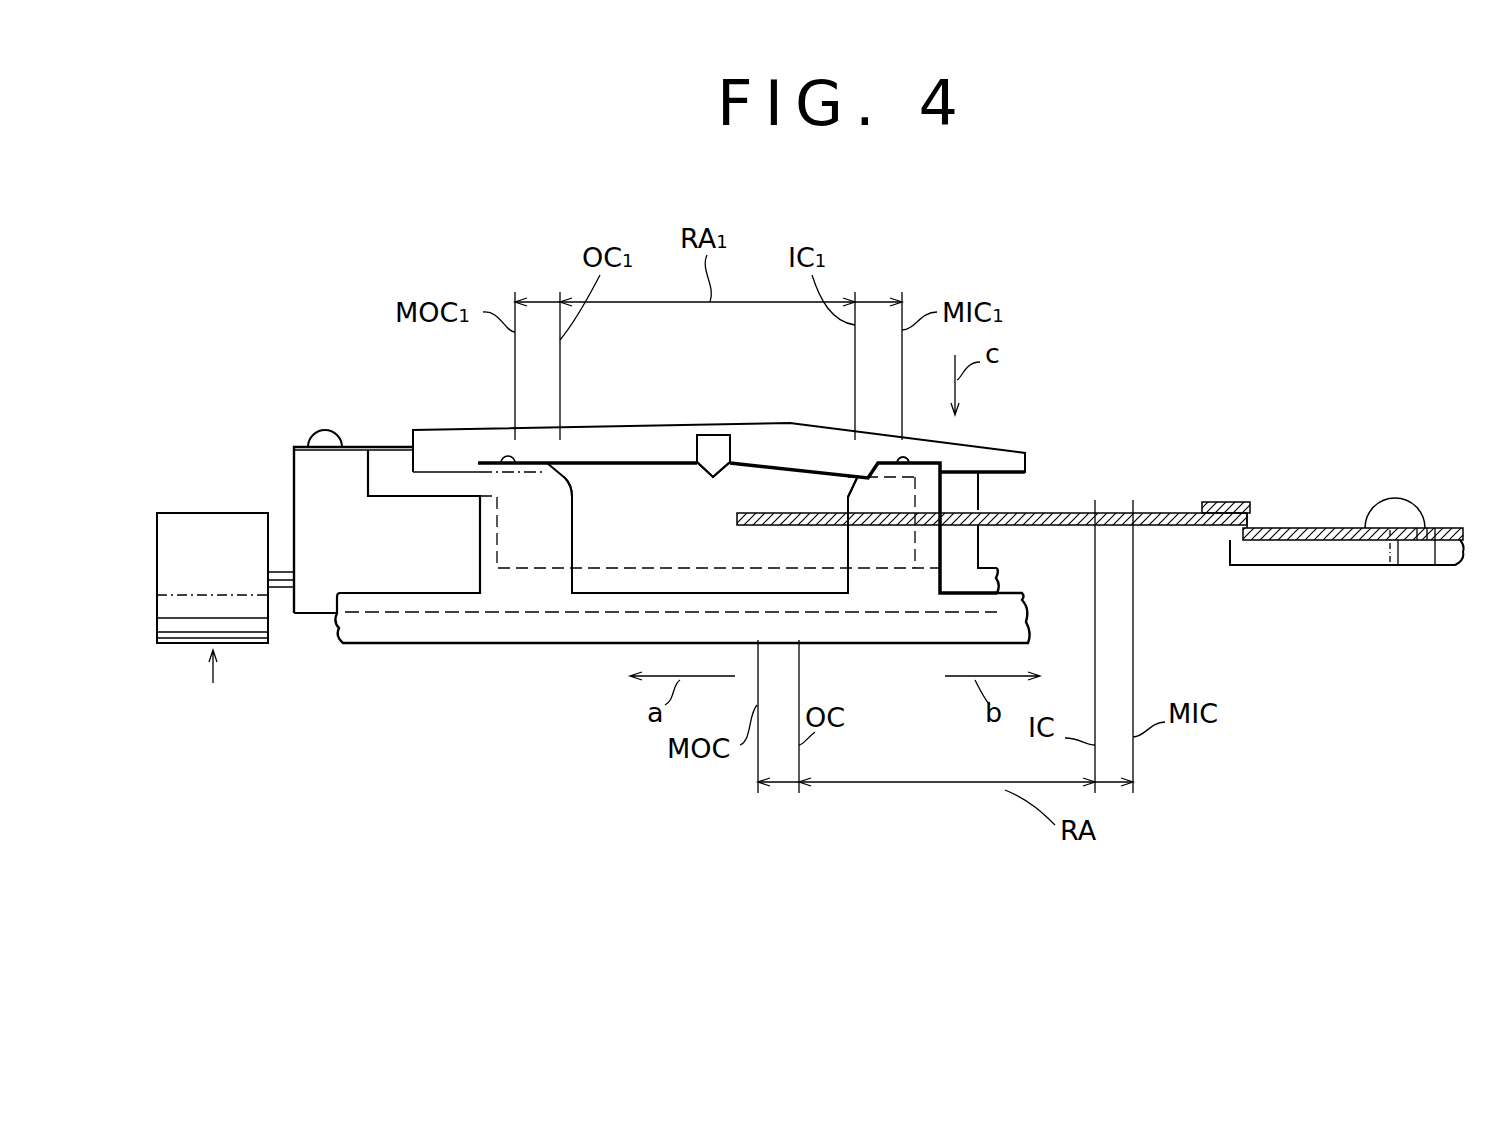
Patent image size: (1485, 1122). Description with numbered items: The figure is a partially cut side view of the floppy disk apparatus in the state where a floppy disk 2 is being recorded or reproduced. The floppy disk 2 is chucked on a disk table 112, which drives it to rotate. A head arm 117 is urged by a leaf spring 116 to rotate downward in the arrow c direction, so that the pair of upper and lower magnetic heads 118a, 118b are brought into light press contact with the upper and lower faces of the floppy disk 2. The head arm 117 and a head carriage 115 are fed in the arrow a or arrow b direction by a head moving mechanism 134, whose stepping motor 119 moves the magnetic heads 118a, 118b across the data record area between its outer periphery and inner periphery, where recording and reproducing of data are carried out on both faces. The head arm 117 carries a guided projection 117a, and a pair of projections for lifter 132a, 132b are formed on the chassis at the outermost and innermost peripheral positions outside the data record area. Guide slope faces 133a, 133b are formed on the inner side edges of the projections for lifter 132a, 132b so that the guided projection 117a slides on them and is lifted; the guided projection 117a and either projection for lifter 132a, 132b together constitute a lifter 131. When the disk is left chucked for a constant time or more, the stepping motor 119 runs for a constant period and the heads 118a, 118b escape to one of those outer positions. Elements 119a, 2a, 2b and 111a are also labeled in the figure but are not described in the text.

The stepping motor 119 is at (192, 512).
The motor shaft 119a is at (283, 567).
The leaf spring 116 is at (388, 445).
The head moving mechanism 134 is at (211, 694).
The head arm 117 is at (640, 432).
The head carriage 115 is at (805, 478).
The guided projection 117a is at (715, 482).
The upper magnetic head 118a is at (962, 488).
The lower magnetic head 118b is at (965, 548).
The floppy disk 2 is at (1060, 513).
The cartridge lower plate 2a is at (1300, 528).
The cartridge positioning pin 2b is at (1390, 525).
The disk table 112 is at (1310, 565).
The positioning hole 111a is at (1392, 545).
The lifter 131 is at (704, 687).
The projection for lifter 132a is at (522, 470).
The projection for lifter 132b is at (917, 655).
The guide slope face 133a is at (578, 482).
The guide slope face 133b is at (858, 482).